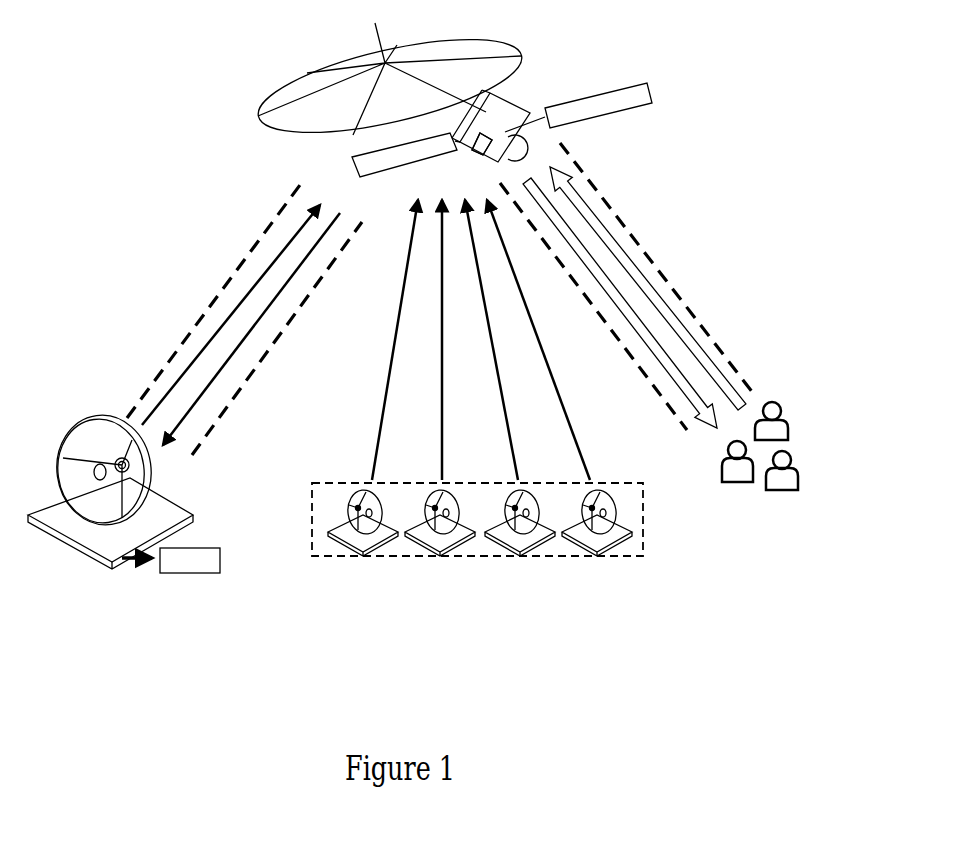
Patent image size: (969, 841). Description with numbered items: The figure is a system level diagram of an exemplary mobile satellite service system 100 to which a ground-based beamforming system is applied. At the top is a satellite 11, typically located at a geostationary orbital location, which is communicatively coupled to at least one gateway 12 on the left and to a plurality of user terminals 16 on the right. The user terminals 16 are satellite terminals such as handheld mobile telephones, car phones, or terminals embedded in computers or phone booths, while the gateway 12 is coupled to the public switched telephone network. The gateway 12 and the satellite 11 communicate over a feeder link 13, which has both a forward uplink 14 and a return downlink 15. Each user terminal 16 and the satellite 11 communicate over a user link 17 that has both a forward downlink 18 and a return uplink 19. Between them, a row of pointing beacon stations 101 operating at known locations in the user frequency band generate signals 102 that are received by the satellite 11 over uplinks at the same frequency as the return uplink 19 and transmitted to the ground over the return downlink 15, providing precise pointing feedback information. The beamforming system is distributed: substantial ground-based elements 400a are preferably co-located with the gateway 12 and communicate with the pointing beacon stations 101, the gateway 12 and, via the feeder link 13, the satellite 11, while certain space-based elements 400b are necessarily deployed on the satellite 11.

The MSS system 100 is at (152, 128).
The satellite 11 is at (517, 93).
The space-based elements 400b is at (473, 155).
The gateway 12 is at (170, 498).
The ground-based elements 400a is at (171, 560).
The feeder link 13 is at (212, 293).
The forward uplink 14 is at (296, 243).
The return downlink 15 is at (290, 292).
The pointing beacon stations 101 is at (311, 540).
The signals 102 is at (540, 355).
The user link 17 is at (647, 247).
The forward downlink 18 is at (652, 340).
The return uplink 19 is at (677, 313).
The user terminals 16 is at (721, 487).